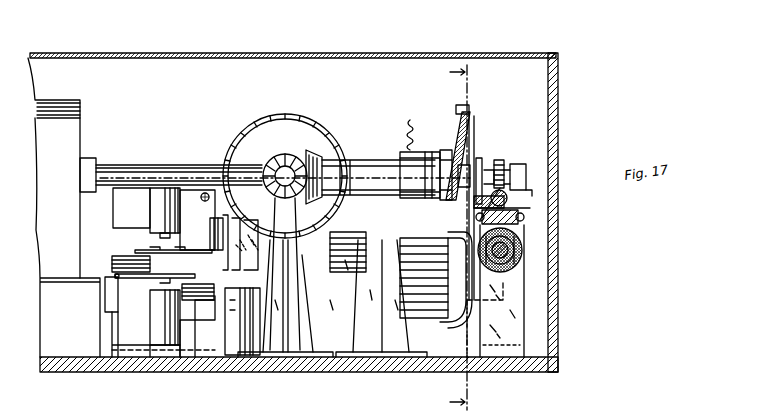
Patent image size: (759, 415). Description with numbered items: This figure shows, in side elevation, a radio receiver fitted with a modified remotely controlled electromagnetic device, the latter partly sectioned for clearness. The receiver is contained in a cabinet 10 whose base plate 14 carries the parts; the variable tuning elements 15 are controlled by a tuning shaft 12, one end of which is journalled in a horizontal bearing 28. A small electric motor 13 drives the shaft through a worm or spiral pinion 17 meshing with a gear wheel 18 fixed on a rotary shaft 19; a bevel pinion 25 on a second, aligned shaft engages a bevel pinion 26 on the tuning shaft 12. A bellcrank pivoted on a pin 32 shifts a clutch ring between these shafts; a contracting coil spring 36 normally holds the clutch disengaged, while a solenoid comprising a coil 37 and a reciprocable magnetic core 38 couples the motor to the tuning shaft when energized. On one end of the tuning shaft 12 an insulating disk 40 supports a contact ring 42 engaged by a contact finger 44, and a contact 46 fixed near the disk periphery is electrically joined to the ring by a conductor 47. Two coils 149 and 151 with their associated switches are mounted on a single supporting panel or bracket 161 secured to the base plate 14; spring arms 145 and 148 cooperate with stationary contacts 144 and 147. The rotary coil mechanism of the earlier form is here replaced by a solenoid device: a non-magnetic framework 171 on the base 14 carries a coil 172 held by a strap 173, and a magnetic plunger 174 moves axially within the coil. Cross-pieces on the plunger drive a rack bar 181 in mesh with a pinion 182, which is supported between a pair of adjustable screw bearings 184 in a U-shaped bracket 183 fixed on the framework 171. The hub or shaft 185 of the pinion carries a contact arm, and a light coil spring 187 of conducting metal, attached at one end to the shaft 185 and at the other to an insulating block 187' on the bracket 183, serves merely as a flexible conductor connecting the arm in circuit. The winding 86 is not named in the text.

The cabinet 10 is at (176, 52).
The base plate 14 is at (513, 371).
The tuning elements 15 is at (64, 207).
The tuning shaft 12 is at (163, 167).
The supporting panel or bracket 161 is at (192, 192).
The gear wheel 18 is at (297, 130).
The bevel pinion 25 is at (279, 152).
The bevel pinion 26 is at (320, 160).
The horizontal bearing 28 is at (366, 160).
The electric motor 13 is at (350, 235).
The winding 86 is at (448, 240).
The contact finger 44 is at (434, 152).
The conductor 47 is at (447, 116).
The contact ring 42 is at (440, 198).
The insulating disk 40 is at (472, 130).
The contact 46 is at (470, 114).
The adjustable screw bearings 184 is at (474, 176).
The coil spring 187 is at (541, 170).
The pinion 182 is at (506, 162).
The hub or shaft 185 is at (507, 194).
The rack bar 181 is at (480, 203).
The insulating block 187' is at (547, 207).
The U-shaped bracket 183 is at (525, 217).
The coil 172 is at (522, 250).
The magnetic plunger 174 is at (522, 258).
The strap 173 is at (518, 272).
The non-magnetic framework 171 is at (520, 318).
The worm or spiral pinion 17 is at (312, 258).
The contracting coil spring 36 is at (240, 225).
The pin 32 is at (232, 255).
The spring arm 145 is at (208, 250).
The coil 149 is at (155, 212).
The stationary contact 144 is at (118, 255).
The spring arm 148 is at (132, 280).
The stationary contact 147 is at (204, 284).
The magnetic core 38 is at (222, 285).
The coil 37 is at (242, 321).
The coil 151 is at (155, 329).
The rotary shaft 19 is at (448, 237).